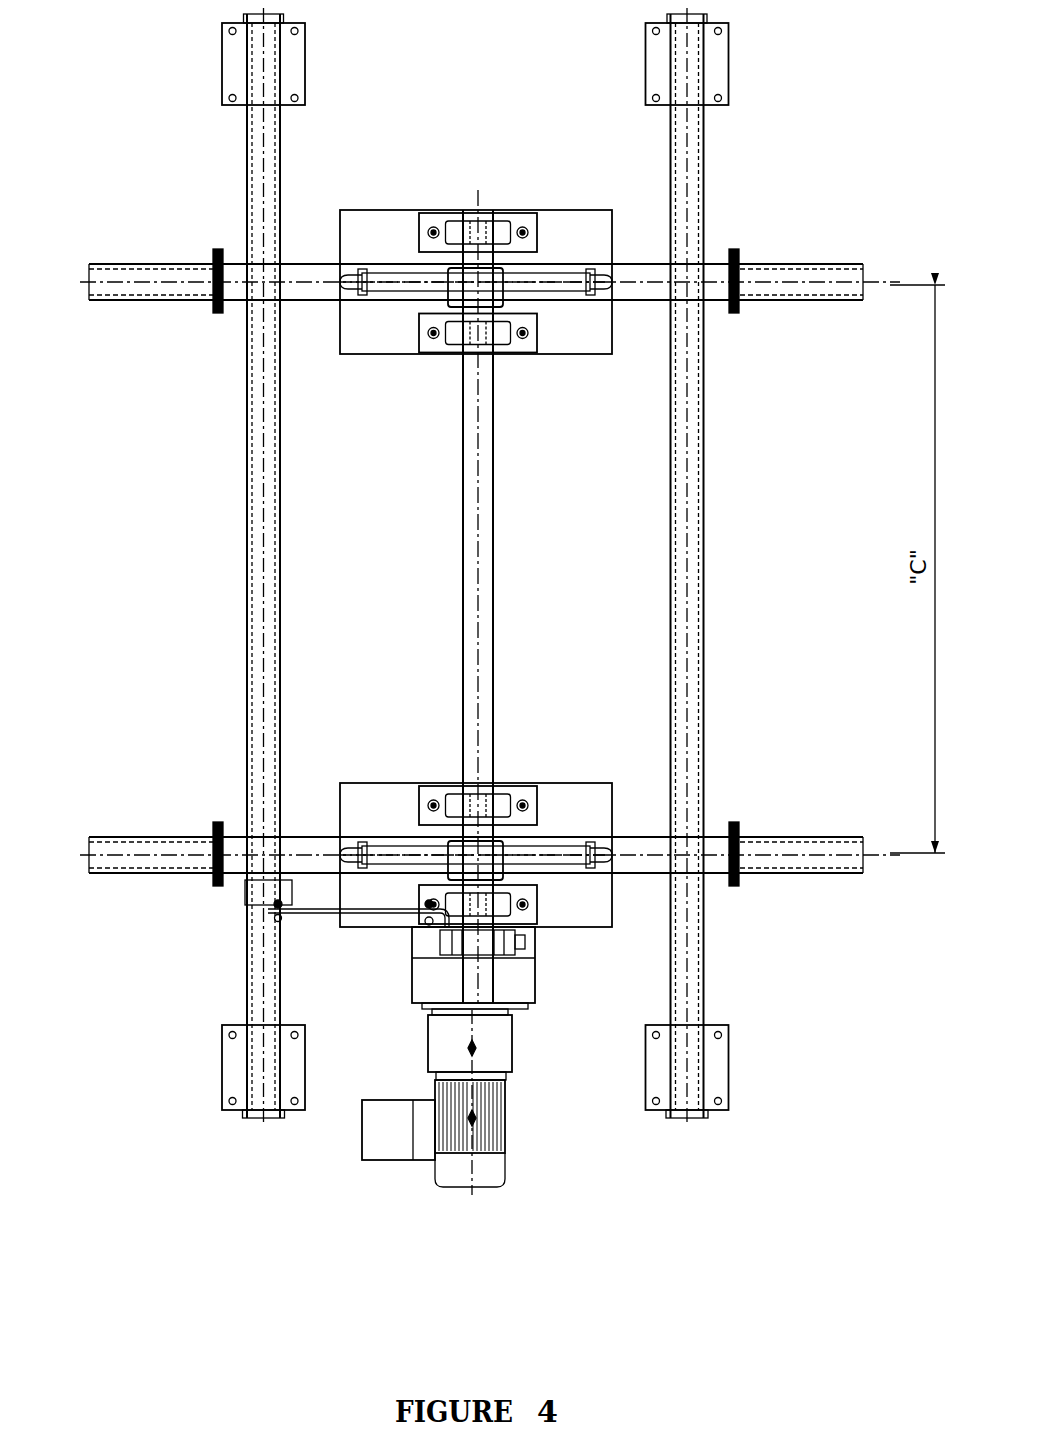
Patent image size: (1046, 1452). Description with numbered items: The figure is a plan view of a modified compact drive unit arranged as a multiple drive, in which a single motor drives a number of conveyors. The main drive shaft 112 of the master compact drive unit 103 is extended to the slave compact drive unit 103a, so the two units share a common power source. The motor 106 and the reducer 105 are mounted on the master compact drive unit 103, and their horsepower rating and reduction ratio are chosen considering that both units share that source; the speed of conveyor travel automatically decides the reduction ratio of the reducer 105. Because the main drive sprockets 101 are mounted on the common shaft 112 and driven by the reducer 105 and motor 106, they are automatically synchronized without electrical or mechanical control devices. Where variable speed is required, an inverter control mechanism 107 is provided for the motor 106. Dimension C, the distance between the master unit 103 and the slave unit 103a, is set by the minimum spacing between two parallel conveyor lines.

The main drive sprockets 101 is at (463, 574).
The master compact drive unit 103 is at (494, 814).
The slave compact drive unit 103a is at (502, 323).
The reducer 105 is at (524, 1006).
The motor 106 is at (520, 1131).
The inverter control mechanism 107 is at (357, 1160).
The main drive shaft 112 is at (536, 596).